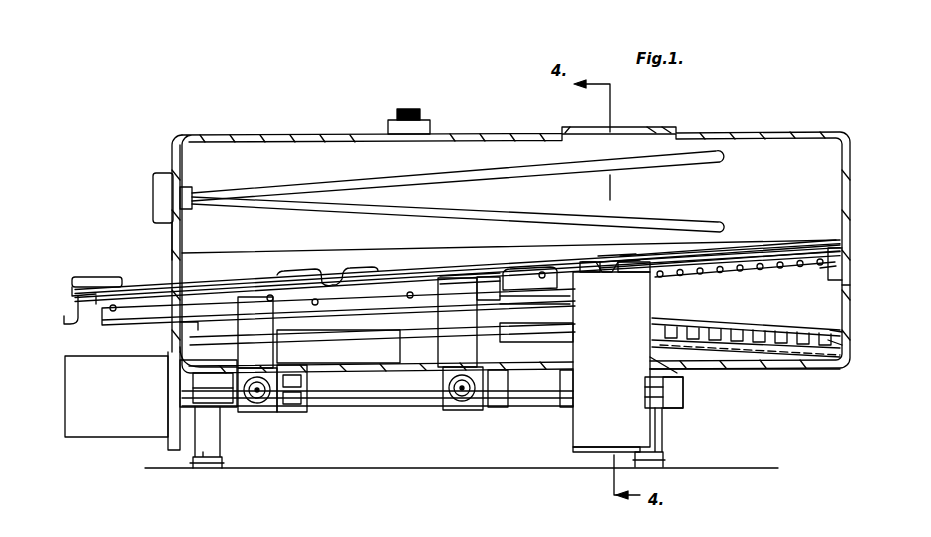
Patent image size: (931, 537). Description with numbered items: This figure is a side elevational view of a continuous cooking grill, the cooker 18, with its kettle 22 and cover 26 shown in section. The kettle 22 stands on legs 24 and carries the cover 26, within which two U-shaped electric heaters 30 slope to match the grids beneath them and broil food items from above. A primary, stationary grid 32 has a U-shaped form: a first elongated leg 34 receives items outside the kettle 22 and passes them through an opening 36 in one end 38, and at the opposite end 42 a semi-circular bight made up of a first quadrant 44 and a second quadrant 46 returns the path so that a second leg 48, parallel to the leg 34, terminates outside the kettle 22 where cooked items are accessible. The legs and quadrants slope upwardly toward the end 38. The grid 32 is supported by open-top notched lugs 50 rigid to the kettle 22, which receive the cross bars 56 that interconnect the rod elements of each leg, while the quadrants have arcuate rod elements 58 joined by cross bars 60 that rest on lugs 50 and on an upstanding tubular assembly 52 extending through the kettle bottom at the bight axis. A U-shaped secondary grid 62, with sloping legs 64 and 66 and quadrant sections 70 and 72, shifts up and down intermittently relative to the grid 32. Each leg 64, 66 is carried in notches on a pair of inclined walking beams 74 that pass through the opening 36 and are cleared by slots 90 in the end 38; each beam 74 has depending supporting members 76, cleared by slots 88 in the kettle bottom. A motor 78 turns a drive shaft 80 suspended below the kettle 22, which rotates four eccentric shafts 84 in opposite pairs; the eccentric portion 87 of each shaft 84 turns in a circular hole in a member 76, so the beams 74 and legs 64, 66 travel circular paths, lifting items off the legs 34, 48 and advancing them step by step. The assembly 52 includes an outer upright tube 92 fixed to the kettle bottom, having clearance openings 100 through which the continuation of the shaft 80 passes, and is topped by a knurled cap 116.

The cooker 18 is at (480, 103).
The kettle 22 is at (733, 374).
The legs 24 is at (205, 470).
The cover 26 is at (280, 128).
The electric heaters 30 is at (484, 170).
The primary stationary grid 32 is at (436, 262).
The first elongated leg 34 is at (62, 312).
The opening 36 is at (178, 258).
The end of kettle 38 is at (172, 352).
The opposite end of kettle 42 is at (858, 283).
The first quadrant 44 is at (845, 238).
The second quadrant 46 is at (844, 330).
The second leg 48 is at (500, 300).
The notched lugs 50 is at (836, 368).
The tubular assembly 52 is at (570, 431).
The cross bars 56 is at (836, 270).
The arcuate rod elements 58 is at (760, 240).
The cross bars 60 is at (768, 282).
The secondary grid 62 is at (102, 268).
The sloping leg 64 is at (303, 262).
The sloping leg 66 is at (556, 306).
The sloping quadrant section 70 is at (796, 222).
The sloping quadrant section 72 is at (712, 308).
The walking beams 74 is at (372, 302).
The supporting members 76 is at (280, 352).
The motor 78 is at (72, 432).
The drive shaft 80 is at (356, 400).
The eccentric shafts 84 is at (256, 404).
The eccentric portion 87 is at (255, 370).
The slots 88 is at (228, 362).
The slots 90 is at (172, 330).
The outer upright tube 92 is at (592, 456).
The clearance openings 100 is at (645, 385).
The knurled cap 116 is at (608, 250).